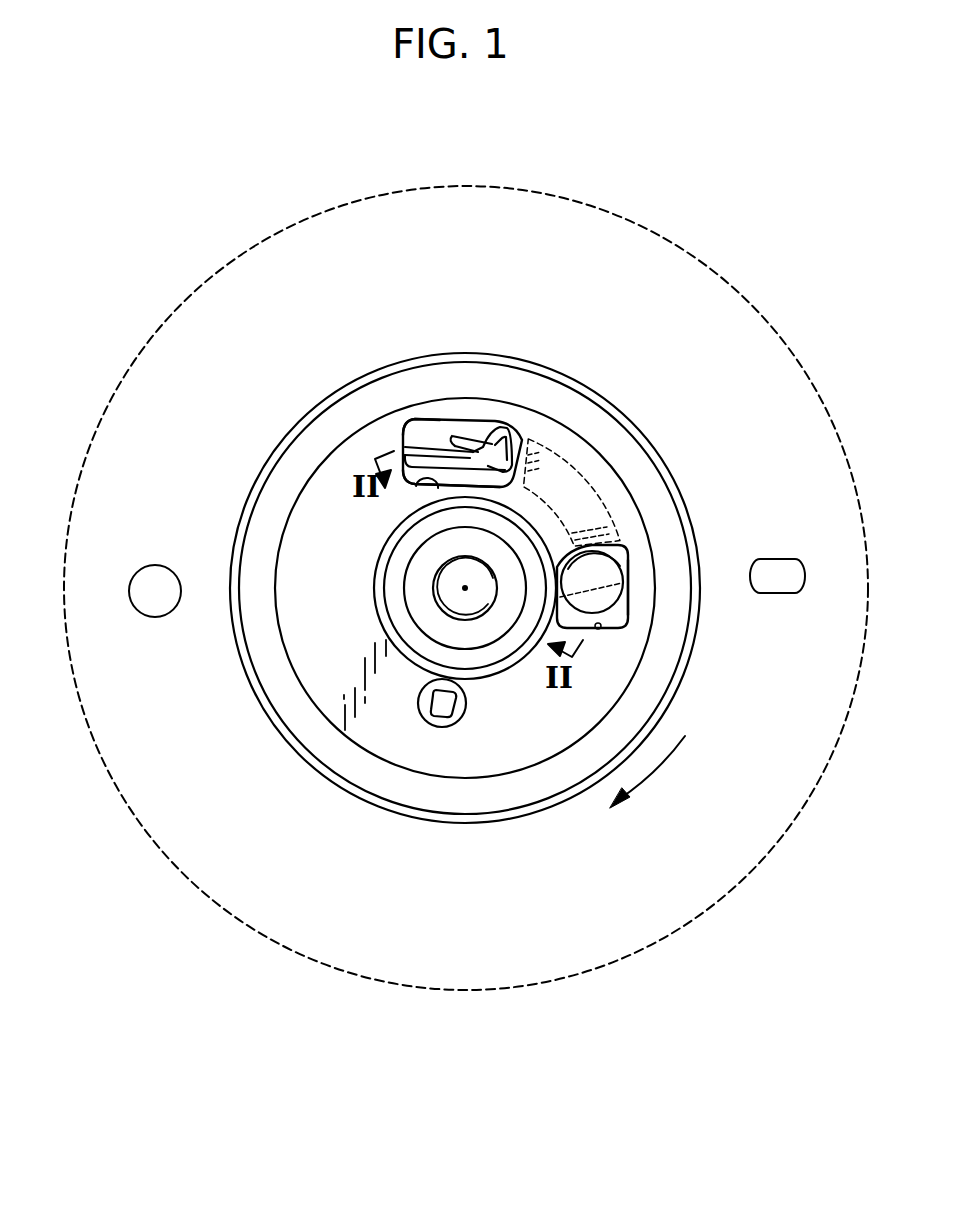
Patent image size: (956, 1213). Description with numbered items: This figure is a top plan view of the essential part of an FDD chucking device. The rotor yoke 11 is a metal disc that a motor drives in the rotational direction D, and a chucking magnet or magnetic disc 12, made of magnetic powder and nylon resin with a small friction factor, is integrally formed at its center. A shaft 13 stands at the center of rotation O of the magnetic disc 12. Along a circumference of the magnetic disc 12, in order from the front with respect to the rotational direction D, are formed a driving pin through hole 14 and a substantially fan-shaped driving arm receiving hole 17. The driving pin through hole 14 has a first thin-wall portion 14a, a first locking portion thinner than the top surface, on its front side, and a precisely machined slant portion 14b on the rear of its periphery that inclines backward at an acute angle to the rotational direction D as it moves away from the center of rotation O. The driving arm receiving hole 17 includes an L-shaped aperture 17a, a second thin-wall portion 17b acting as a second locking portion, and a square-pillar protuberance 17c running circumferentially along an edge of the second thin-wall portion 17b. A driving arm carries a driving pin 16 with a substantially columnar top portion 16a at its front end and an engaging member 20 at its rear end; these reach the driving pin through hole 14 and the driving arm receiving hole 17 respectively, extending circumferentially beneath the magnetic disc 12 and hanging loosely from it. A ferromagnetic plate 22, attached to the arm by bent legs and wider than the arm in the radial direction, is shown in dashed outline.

The rotor yoke 11 is at (242, 278).
The magnetic disc 12 is at (473, 753).
The shaft 13 is at (478, 598).
The center of rotation O is at (465, 588).
The driving pin through hole 14 is at (598, 630).
The first thin-wall portion 14a is at (630, 596).
The slant portion 14b is at (608, 578).
The driving pin 16 is at (618, 603).
The top portion 16a is at (610, 578).
The driving arm receiving hole 17 is at (422, 483).
The L-shaped aperture 17a is at (493, 487).
The second thin-wall portion 17b is at (412, 437).
The protuberance 17c is at (430, 455).
The engaging member 20 is at (457, 440).
The ferromagnetic plate 22 is at (568, 486).
The rotational direction D is at (632, 785).